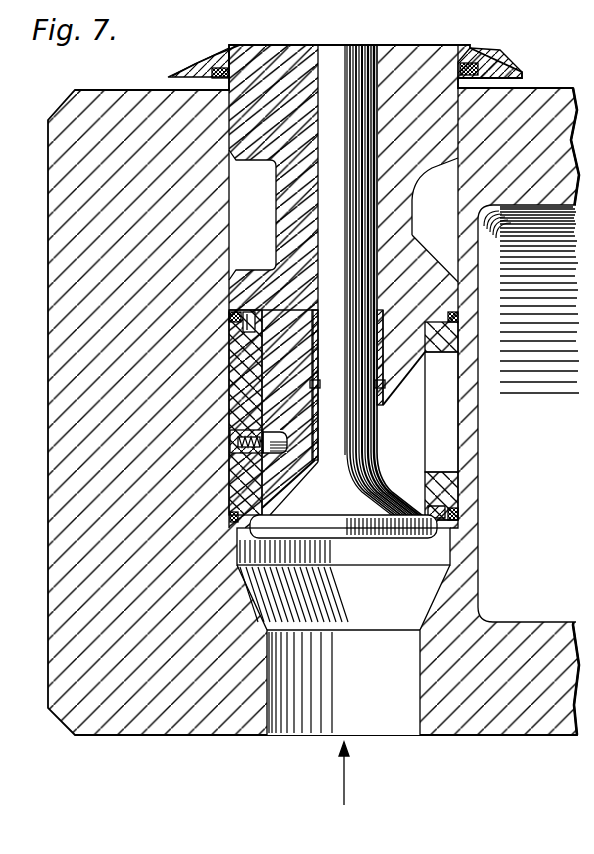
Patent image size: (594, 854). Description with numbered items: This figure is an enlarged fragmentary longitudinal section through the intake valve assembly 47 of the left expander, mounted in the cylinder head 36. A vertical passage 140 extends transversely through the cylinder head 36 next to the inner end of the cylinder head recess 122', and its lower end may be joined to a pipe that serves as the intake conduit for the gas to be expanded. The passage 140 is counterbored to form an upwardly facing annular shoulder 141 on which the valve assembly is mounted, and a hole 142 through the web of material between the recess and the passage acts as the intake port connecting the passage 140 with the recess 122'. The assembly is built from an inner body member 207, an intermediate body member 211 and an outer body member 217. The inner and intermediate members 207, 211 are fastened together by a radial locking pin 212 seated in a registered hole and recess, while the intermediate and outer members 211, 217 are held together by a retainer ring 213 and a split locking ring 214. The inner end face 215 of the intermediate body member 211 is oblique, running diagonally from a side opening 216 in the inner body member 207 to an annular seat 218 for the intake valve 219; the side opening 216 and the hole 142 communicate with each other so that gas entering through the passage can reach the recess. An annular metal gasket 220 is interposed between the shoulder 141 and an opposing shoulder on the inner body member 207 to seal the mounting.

The cylinder head 36 is at (143, 740).
The upper housing section 47 is at (444, 44).
The retainer ring 213 is at (222, 68).
The split locking ring 214 is at (190, 76).
The outer body member 217 is at (492, 58).
The intermediate body member 211 is at (297, 412).
The radial locking pin 212 is at (288, 433).
The inner end face 215 is at (405, 372).
The side opening 216 is at (445, 356).
The hole 142 is at (477, 476).
The inner body member 207 is at (450, 490).
The annular seat 218 is at (440, 517).
The annular metal gasket 220 is at (460, 516).
The annular shoulder 141 is at (450, 522).
The intake valve 219 is at (358, 538).
The cylinder head recess 122' is at (528, 413).
The vertical passage 140 is at (413, 735).